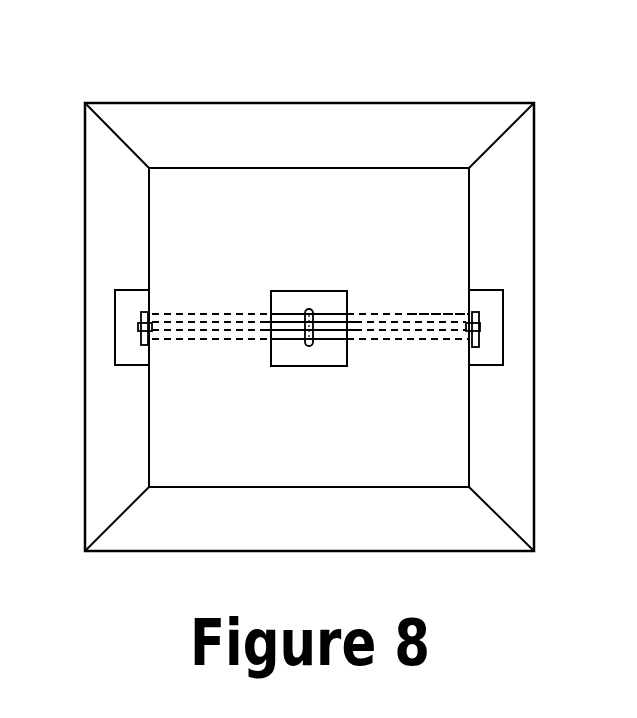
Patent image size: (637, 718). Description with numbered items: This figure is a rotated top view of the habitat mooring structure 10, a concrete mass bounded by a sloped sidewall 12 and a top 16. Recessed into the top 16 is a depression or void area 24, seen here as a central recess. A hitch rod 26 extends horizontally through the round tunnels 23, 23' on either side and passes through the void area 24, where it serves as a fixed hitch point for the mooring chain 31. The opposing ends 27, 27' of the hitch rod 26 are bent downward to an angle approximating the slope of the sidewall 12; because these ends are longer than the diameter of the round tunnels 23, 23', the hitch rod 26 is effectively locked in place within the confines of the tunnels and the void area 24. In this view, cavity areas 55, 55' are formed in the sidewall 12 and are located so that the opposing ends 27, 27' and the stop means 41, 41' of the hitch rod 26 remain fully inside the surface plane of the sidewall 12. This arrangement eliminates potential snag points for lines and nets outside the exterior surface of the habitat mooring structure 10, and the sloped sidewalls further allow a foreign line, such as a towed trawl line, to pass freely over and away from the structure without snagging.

The habitat mooring structure 10 is at (63, 91).
The sidewall 12 is at (523, 169).
The top 16 is at (204, 178).
The round tunnel 23 is at (415, 284).
The round tunnel 23' is at (210, 284).
The void area 24 is at (281, 359).
The hitch rod 26 is at (287, 322).
The opposing end of hitch rod 27 is at (493, 368).
The opposing end of hitch rod 27' is at (127, 368).
The mooring chain 31 is at (308, 347).
The stop means 41 is at (454, 292).
The stop means 41' is at (175, 291).
The cavity area 55 is at (526, 319).
The cavity area 55' is at (94, 319).